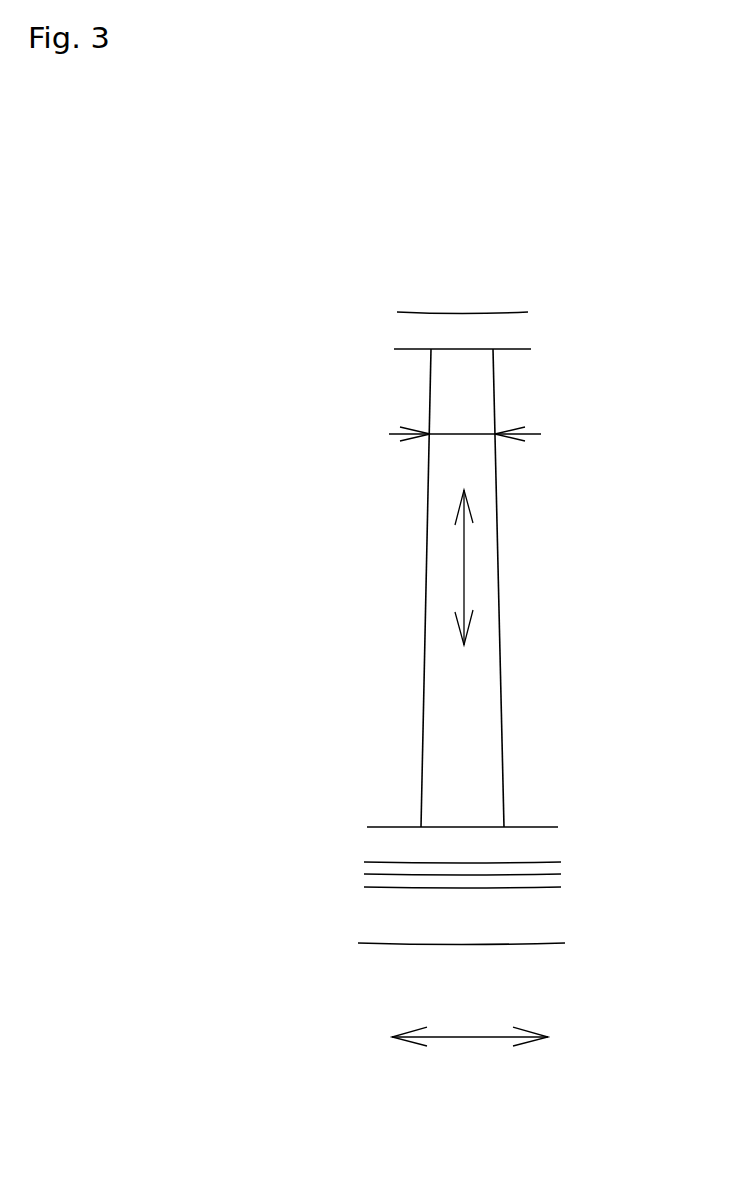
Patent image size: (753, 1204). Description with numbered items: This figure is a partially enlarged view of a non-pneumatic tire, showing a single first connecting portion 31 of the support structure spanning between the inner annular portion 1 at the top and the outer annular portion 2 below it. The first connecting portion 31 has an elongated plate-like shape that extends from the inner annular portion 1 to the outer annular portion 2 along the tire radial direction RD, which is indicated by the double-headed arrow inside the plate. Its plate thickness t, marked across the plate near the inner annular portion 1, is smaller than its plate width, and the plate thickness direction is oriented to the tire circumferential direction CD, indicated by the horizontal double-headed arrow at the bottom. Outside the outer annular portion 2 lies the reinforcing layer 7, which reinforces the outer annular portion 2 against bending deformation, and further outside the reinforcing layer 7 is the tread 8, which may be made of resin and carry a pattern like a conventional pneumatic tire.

The inner annular portion 1 is at (527, 331).
The first connecting portion 31 is at (505, 543).
The outer annular portion 2 is at (560, 845).
The reinforcing layer 7 is at (568, 875).
The tread 8 is at (563, 917).
The plate thickness t is at (472, 433).
The tire radial direction RD is at (452, 567).
The tire circumferential direction CD is at (470, 1025).